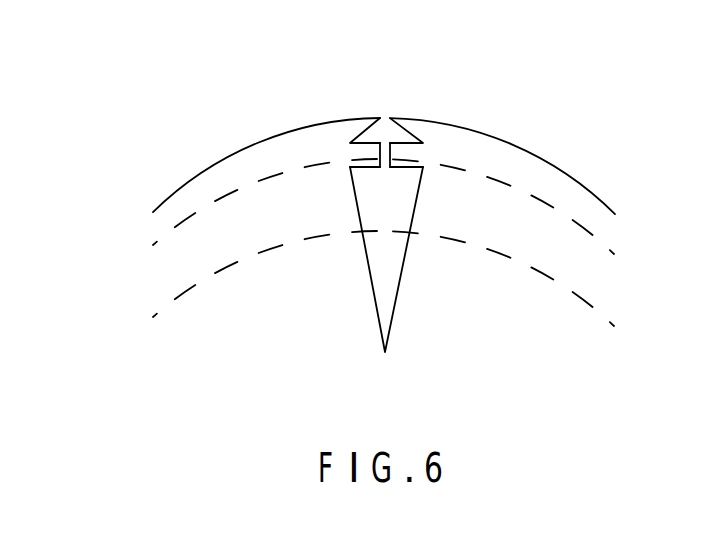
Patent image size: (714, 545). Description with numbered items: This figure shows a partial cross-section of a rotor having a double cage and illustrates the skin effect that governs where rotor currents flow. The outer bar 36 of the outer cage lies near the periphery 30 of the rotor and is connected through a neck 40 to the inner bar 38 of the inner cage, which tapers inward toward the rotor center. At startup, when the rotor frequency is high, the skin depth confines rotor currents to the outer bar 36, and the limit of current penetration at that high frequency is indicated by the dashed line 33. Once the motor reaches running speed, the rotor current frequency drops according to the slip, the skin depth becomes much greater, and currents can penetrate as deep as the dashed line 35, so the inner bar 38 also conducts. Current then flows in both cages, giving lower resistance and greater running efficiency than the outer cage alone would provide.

The periphery of the rotor 30 is at (247, 147).
The line depicting limit of rotor current penetration at high frequency 33 is at (198, 210).
The line depicting skin depth at low frequency 35 is at (197, 283).
The outer bar 36 is at (412, 135).
The inner bar 38 is at (402, 272).
The neck 40 is at (393, 150).